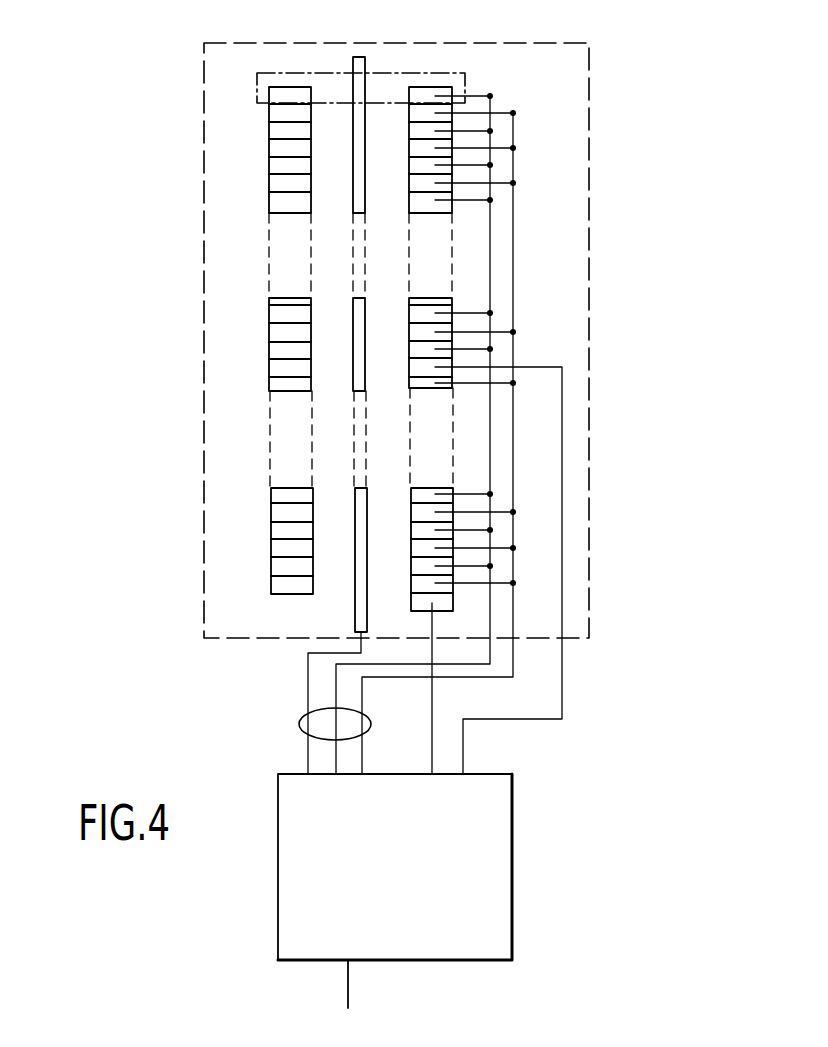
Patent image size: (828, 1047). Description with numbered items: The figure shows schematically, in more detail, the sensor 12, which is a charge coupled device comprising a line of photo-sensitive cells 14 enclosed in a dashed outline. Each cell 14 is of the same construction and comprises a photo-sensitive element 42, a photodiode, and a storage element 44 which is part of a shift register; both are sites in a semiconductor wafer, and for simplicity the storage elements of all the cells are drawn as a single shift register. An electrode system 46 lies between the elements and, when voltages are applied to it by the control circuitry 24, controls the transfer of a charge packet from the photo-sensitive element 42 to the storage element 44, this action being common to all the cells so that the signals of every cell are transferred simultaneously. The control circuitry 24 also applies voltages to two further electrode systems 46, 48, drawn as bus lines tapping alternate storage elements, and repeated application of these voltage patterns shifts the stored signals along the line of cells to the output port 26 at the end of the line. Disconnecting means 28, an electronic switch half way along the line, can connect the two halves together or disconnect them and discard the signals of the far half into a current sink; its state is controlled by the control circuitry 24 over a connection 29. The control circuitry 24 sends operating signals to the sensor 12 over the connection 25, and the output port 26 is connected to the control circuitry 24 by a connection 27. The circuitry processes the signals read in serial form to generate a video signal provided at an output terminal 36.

The sensor 12 is at (590, 78).
The photo-sensitive cell 14 is at (257, 91).
The control circuitry 24 is at (277, 820).
The connection 25 is at (298, 720).
The output port 26 is at (423, 602).
The connection 27 is at (432, 629).
The disconnecting means 28 is at (420, 367).
The connection 29 is at (540, 364).
The output terminal 36 is at (347, 985).
The photo-sensitive element 42 is at (293, 95).
The storage element 44 is at (420, 93).
The electrode system 46 is at (359, 63).
The electrode system 48 is at (513, 200).